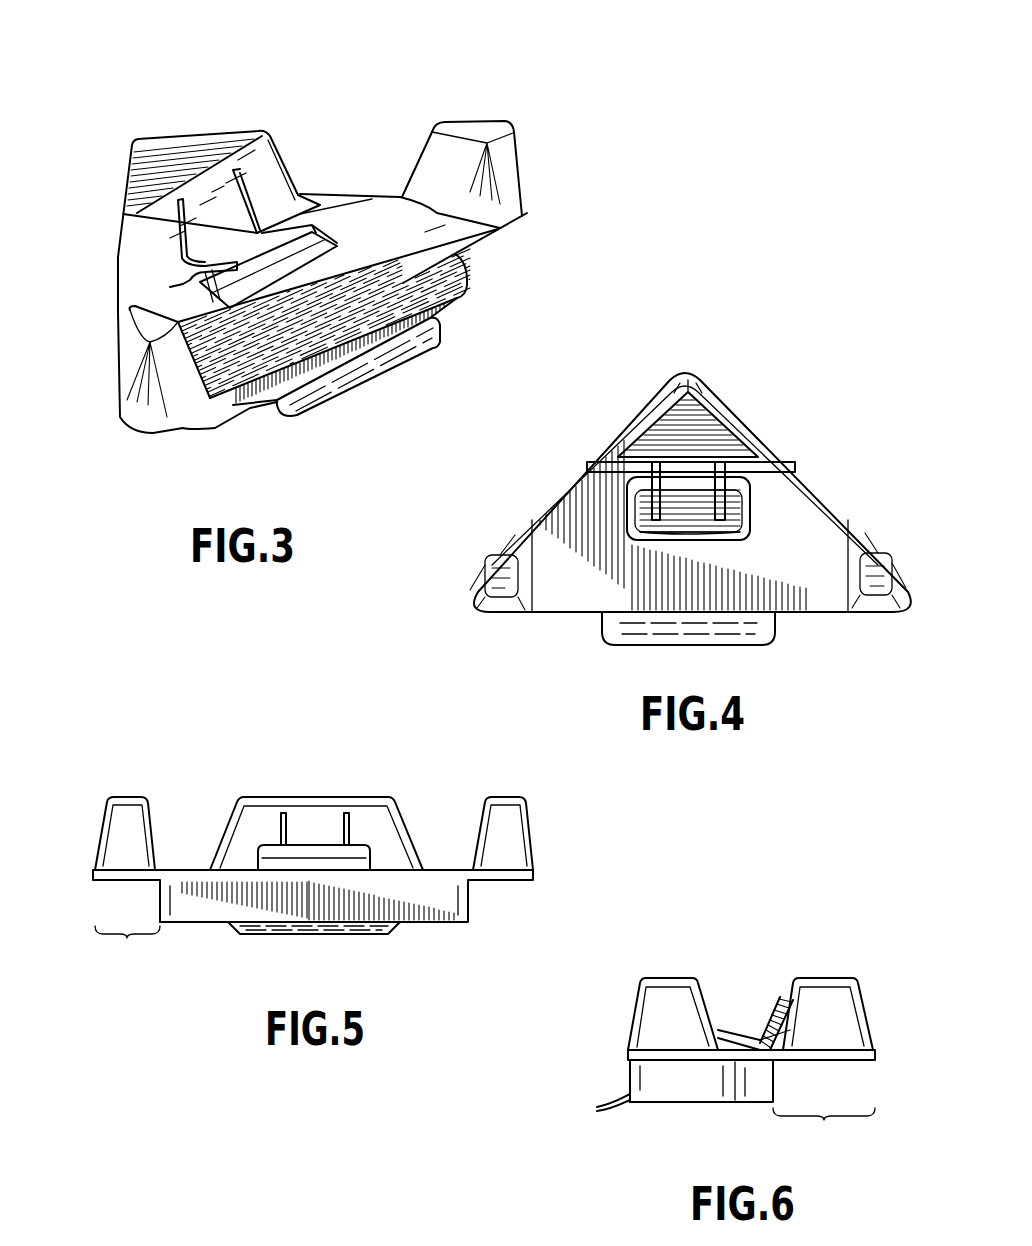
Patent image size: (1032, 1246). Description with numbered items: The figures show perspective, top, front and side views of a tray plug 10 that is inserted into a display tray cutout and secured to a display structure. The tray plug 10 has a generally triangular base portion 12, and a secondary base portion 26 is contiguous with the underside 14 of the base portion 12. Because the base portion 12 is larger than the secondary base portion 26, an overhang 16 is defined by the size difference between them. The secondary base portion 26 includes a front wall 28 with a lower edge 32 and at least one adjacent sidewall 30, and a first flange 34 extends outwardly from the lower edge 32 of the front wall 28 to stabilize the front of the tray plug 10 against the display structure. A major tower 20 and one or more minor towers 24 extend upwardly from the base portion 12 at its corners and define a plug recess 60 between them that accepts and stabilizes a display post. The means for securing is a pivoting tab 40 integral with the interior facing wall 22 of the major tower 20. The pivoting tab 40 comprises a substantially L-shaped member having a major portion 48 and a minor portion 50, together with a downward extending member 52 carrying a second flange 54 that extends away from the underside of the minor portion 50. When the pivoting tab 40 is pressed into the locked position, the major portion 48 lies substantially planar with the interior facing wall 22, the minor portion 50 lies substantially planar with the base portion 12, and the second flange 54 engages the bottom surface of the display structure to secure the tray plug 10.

In FIG. 3, the tray plug 10 is at (383, 68).
In FIG. 4, the tray plug 10 is at (808, 368).
In FIG. 5, the tray plug 10 is at (205, 718).
In FIG. 6, the tray plug 10 is at (808, 915).
In FIG. 3, the base portion 12 is at (327, 192).
In FIG. 4, the base portion 12 is at (691, 467).
In FIG. 5, the underside 14 is at (120, 880).
In FIG. 6, the underside 14 is at (751, 1055).
In FIG. 5, the overhang 16 is at (127, 951).
In FIG. 6, the overhang 16 is at (824, 1137).
In FIG. 3, the major tower 20 is at (178, 135).
In FIG. 4, the major tower 20 is at (707, 408).
In FIG. 5, the major tower 20 is at (315, 797).
In FIG. 6, the major tower 20 is at (835, 975).
In FIG. 3, the interior facing wall 22 is at (258, 176).
In FIG. 5, the interior facing wall 22 is at (387, 837).
In FIG. 3, the minor towers 24 is at (495, 122).
In FIG. 4, the minor towers 24 is at (505, 565).
In FIG. 5, the minor towers 24 is at (125, 798).
In FIG. 6, the minor towers 24 is at (670, 975).
In FIG. 3, the secondary base portion 26 is at (467, 285).
In FIG. 4, the secondary base portion 26 is at (692, 492).
In FIG. 3, the front wall 28 is at (458, 276).
In FIG. 5, the front wall 28 is at (440, 900).
In FIG. 6, the sidewall 30 is at (680, 1078).
In FIG. 3, the lower edge 32 is at (255, 420).
In FIG. 5, the lower edge 32 is at (232, 922).
In FIG. 6, the lower edge 32 is at (630, 1102).
In FIG. 3, the first flange 34 is at (442, 338).
In FIG. 4, the first flange 34 is at (605, 642).
In FIG. 5, the first flange 34 is at (392, 935).
In FIG. 6, the first flange 34 is at (597, 1108).
In FIG. 3, the pivoting tab 40 is at (357, 194).
In FIG. 4, the pivoting tab 40 is at (740, 492).
In FIG. 6, the pivoting tab 40 is at (763, 1030).
In FIG. 3, the major portion 48 is at (203, 217).
In FIG. 4, the major portion 48 is at (688, 491).
In FIG. 5, the major portion 48 is at (307, 827).
In FIG. 6, the major portion 48 is at (790, 1030).
In FIG. 3, the minor portion 50 is at (327, 243).
In FIG. 4, the minor portion 50 is at (668, 532).
In FIG. 5, the minor portion 50 is at (262, 860).
In FIG. 6, the minor portion 50 is at (727, 1030).
In FIG. 3, the downward extending member 52 is at (205, 285).
In FIG. 4, the second flange 54 is at (730, 507).
In FIG. 3, the plug recess 60 is at (433, 228).